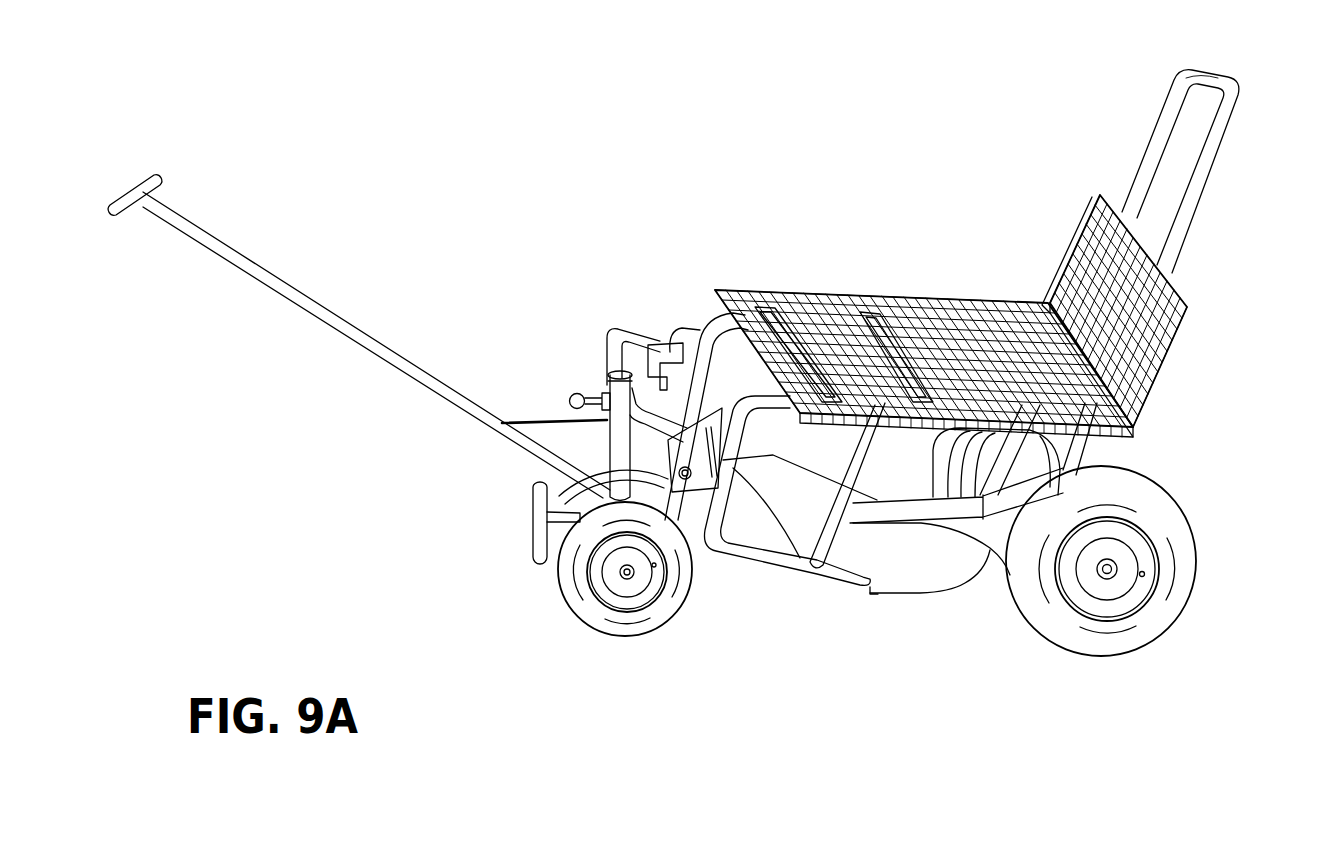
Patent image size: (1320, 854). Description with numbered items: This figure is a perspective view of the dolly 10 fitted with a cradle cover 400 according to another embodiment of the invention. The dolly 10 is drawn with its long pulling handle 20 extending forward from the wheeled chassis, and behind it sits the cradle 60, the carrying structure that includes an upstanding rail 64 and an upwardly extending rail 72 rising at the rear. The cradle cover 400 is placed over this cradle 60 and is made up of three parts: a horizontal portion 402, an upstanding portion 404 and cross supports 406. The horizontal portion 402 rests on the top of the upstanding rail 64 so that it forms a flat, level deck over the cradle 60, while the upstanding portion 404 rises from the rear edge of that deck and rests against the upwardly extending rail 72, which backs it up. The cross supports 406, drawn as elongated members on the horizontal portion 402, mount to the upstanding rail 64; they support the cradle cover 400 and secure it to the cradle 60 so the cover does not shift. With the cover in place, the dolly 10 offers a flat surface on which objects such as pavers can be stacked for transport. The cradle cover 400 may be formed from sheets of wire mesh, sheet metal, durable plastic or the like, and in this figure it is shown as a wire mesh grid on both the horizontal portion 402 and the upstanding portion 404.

The dolly 10 is at (458, 240).
The handle 20 is at (357, 403).
The cradle 60 is at (1231, 338).
The upstanding rail 64 is at (780, 402).
The upwardly extending rail 72 is at (1157, 140).
The cradle cover 400 is at (912, 291).
The horizontal portion 402 is at (847, 300).
The upstanding portion 404 is at (1157, 367).
The cross supports 406 is at (820, 313).